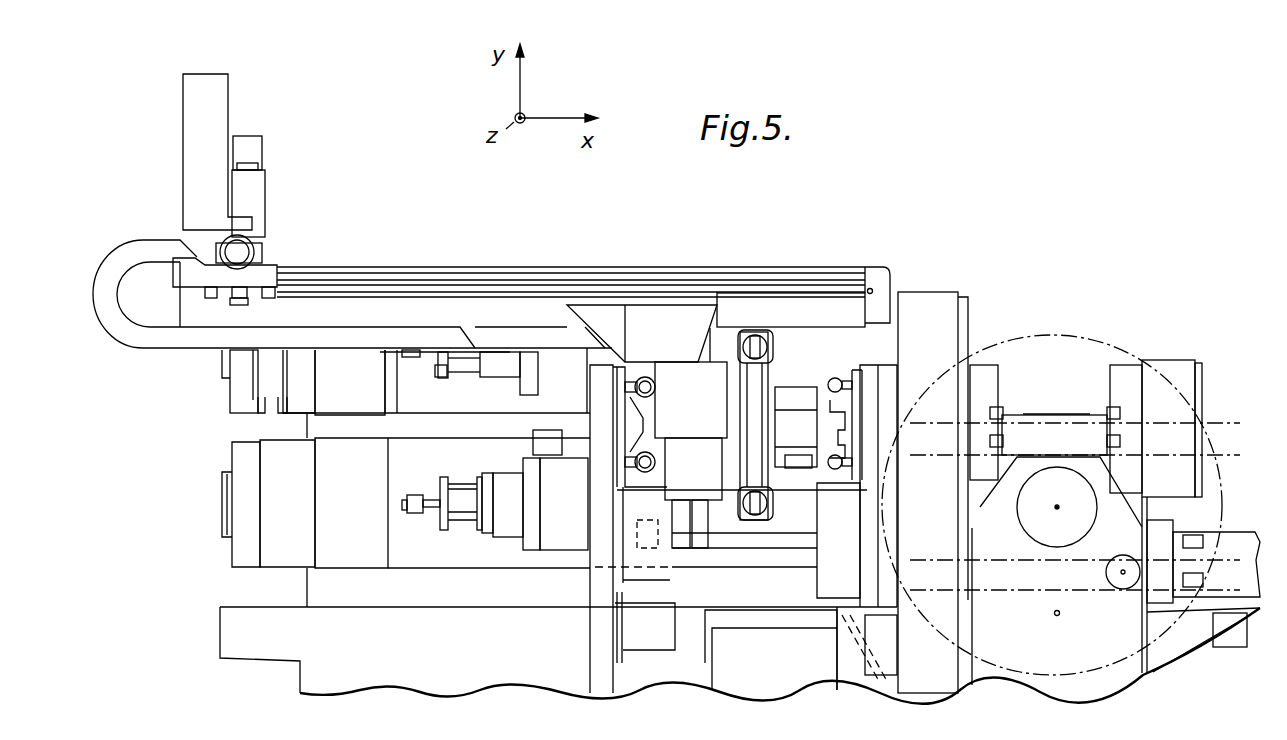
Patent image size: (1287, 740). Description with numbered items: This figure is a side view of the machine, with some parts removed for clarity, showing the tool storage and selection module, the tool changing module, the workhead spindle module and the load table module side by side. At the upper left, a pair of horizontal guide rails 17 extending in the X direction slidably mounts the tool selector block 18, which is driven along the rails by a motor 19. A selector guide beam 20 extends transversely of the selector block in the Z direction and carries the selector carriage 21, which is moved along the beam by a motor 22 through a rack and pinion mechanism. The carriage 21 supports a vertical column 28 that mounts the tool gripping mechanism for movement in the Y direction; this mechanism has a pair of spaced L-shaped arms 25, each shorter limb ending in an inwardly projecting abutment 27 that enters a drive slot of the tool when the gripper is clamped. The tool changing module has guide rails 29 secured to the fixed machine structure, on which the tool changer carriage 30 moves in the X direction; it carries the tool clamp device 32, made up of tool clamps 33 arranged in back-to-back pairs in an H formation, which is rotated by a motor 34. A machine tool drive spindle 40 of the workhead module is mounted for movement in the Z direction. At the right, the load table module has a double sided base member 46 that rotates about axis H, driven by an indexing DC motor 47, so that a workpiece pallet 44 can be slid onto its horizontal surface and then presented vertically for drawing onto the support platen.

The horizontal guide rails 17 is at (648, 450).
The tool selector block 18 is at (706, 421).
The motor 19 is at (680, 490).
The selector guide beam 20 is at (737, 307).
The selector carriage 21 is at (262, 272).
The motor 22 is at (240, 252).
The L-shaped arms 25 is at (287, 378).
The inwardly projecting abutment 27 is at (283, 414).
The vertical column 28 is at (253, 188).
The guide rails 29 is at (830, 458).
The tool changer carriage 30 is at (835, 407).
The tool clamp device 32 is at (790, 395).
The tool clamp 33 is at (773, 520).
The motor 34 is at (757, 380).
The machine tool drive spindle 40 is at (568, 528).
The workpiece pallet 44 is at (1127, 383).
The double sided base member 46 is at (1083, 440).
The indexing DC motor 47 is at (1053, 527).
The axis H is at (1057, 505).